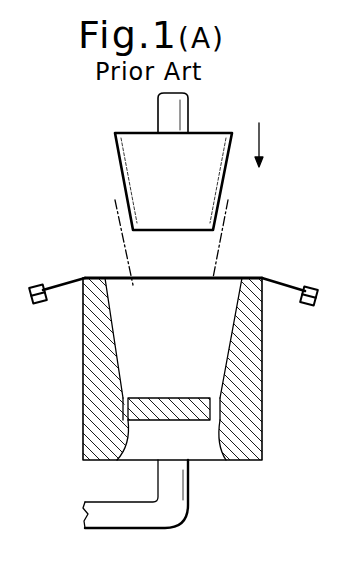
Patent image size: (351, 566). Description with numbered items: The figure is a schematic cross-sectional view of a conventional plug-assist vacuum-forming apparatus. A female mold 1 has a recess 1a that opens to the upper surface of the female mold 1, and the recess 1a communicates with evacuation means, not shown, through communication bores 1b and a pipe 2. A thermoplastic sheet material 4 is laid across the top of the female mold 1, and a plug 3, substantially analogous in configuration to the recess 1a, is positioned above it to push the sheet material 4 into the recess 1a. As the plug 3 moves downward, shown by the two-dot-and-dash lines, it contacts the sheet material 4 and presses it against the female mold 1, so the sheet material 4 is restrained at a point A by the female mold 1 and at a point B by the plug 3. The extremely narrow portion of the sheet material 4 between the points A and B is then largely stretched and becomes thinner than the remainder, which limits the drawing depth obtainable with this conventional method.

The female mold 1 is at (262, 393).
The recess 1a is at (140, 355).
The communication bores 1b is at (122, 455).
The pipe 2 is at (150, 530).
The plug 3 is at (120, 162).
The thermoplastic sheet material 4 is at (270, 278).
The point A is at (103, 275).
The point B is at (133, 280).